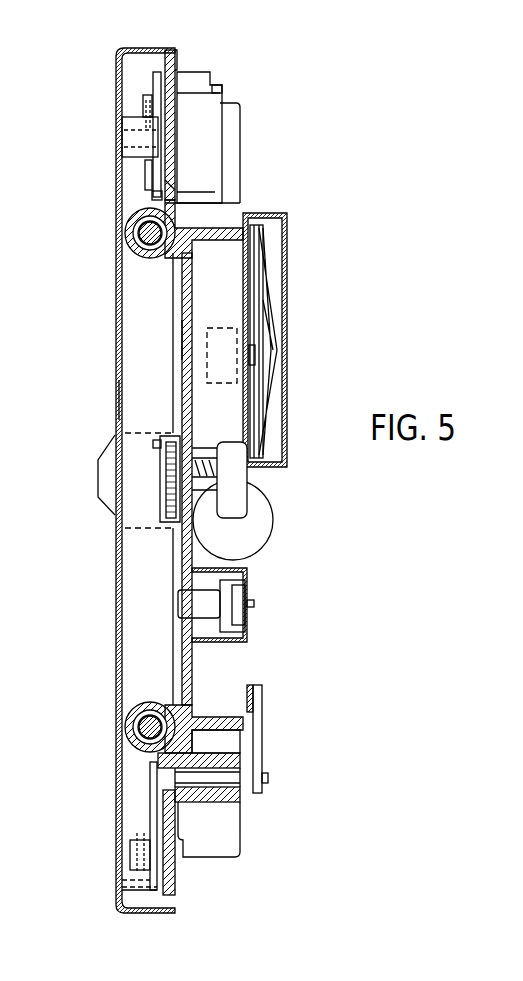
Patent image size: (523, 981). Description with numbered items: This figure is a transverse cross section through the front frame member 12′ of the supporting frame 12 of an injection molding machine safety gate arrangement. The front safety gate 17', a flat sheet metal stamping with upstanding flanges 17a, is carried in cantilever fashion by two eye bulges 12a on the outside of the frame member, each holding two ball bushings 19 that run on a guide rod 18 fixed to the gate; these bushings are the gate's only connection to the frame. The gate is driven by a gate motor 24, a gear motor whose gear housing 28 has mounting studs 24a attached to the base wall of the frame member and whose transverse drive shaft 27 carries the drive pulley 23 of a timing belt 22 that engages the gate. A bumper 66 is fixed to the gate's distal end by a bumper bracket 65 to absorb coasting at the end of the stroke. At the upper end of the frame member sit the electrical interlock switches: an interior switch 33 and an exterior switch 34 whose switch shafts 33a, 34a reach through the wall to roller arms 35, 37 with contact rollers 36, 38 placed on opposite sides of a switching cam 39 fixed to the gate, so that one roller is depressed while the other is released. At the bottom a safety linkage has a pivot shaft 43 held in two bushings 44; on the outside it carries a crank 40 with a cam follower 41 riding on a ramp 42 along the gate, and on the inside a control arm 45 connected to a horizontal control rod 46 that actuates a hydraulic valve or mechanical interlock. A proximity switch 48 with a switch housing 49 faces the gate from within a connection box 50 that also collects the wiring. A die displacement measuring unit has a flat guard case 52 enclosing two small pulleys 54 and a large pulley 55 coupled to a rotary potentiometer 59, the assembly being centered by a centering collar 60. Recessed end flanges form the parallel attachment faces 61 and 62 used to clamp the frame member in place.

The supporting frame 12 is at (176, 300).
The front frame member 12′ is at (185, 338).
The eye bulge 12a is at (167, 248).
The gate flange 17a is at (130, 48).
The front safety gate 17' is at (84, 400).
The guide rod 18 is at (137, 236).
The ball bushing 19 is at (142, 221).
The timing belt 22 is at (165, 520).
The drive pulley 23 is at (160, 497).
The gate motor 24 is at (257, 515).
The mounting stud 24a is at (208, 447).
The drive shaft 27 is at (165, 470).
The gear housing 28 is at (237, 478).
The interior switch 33 is at (219, 86).
The switch shaft 33a is at (165, 185).
The exterior switch 34 is at (195, 110).
The switch shaft 34a is at (168, 70).
The roller arm 35 is at (156, 195).
The contact roller 36 is at (145, 170).
The roller arm 37 is at (156, 78).
The contact roller 38 is at (147, 104).
The switching cam 39 is at (128, 145).
The crank 40 is at (152, 797).
The cam follower 41 is at (135, 848).
The ramp 42 is at (130, 888).
The pivot shaft 43 is at (248, 790).
The bushing 44 is at (232, 787).
The control arm 45 is at (258, 745).
The control rod 46 is at (255, 697).
The proximity switch 48 is at (255, 603).
The switch housing 49 is at (205, 607).
The connection box 50 is at (245, 572).
The guard case 52 is at (290, 218).
The small pulley 54 is at (262, 237).
The large pulley 55 is at (262, 340).
The rotary potentiometer 59 is at (222, 333).
The centering collar 60 is at (252, 356).
The attachment face 61 is at (237, 103).
The attachment face 62 is at (195, 858).
The bumper bracket 65 is at (137, 530).
The bumper 66 is at (102, 470).